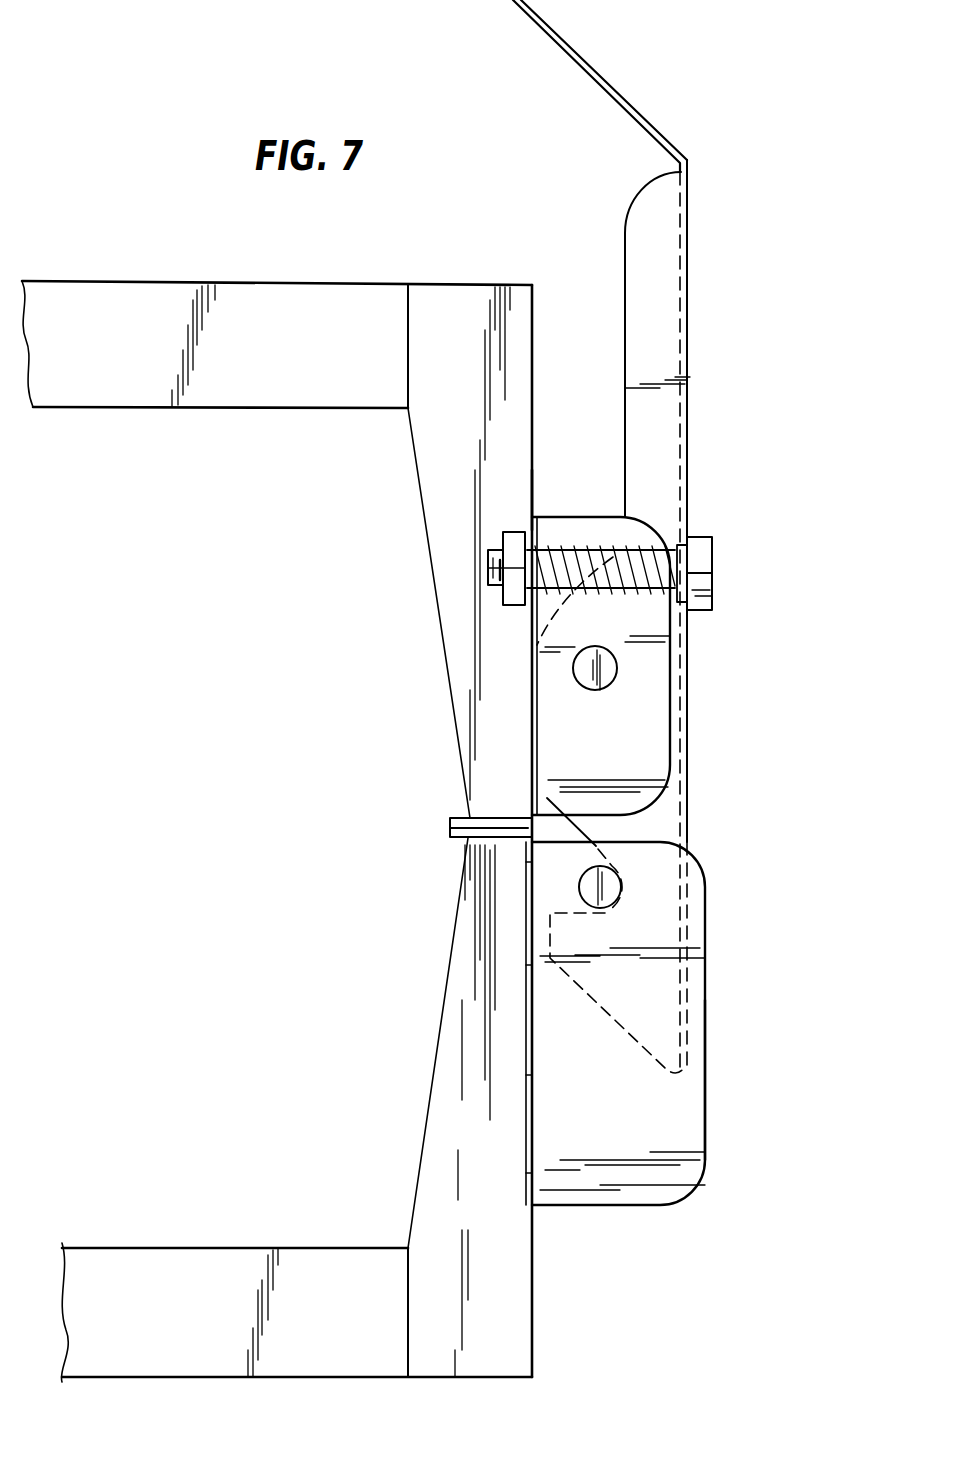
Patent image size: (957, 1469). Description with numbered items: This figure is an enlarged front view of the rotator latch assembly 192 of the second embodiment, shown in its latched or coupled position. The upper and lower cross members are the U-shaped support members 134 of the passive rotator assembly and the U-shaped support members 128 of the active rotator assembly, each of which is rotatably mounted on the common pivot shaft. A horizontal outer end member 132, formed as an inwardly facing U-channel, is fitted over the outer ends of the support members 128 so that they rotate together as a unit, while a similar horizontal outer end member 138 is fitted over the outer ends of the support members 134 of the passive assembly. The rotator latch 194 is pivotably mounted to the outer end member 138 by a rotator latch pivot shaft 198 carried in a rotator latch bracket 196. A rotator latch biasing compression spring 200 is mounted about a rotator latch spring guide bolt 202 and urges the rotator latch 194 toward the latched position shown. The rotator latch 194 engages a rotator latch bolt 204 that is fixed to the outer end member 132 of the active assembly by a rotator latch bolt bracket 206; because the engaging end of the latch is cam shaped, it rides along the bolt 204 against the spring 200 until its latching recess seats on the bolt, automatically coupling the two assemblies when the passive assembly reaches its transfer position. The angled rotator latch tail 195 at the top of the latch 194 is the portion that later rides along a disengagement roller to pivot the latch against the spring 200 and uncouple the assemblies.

The U-shaped support member 128 is at (222, 1312).
The horizontal outer end member 132 is at (537, 1215).
The U-shaped support member 134 is at (259, 361).
The horizontal outer end member 138 is at (536, 499).
The rotator latch assembly 192 is at (733, 884).
The rotator latch 194 is at (672, 328).
The rotator latch tail 195 is at (607, 77).
The rotator latch bracket 196 is at (612, 518).
The rotator latch pivot shaft 198 is at (612, 670).
The rotator latch biasing compression spring 200 is at (590, 518).
The rotator latch spring guide bolt 202 is at (707, 557).
The rotator latch bolt 204 is at (588, 892).
The rotator latch bolt bracket 206 is at (700, 1093).